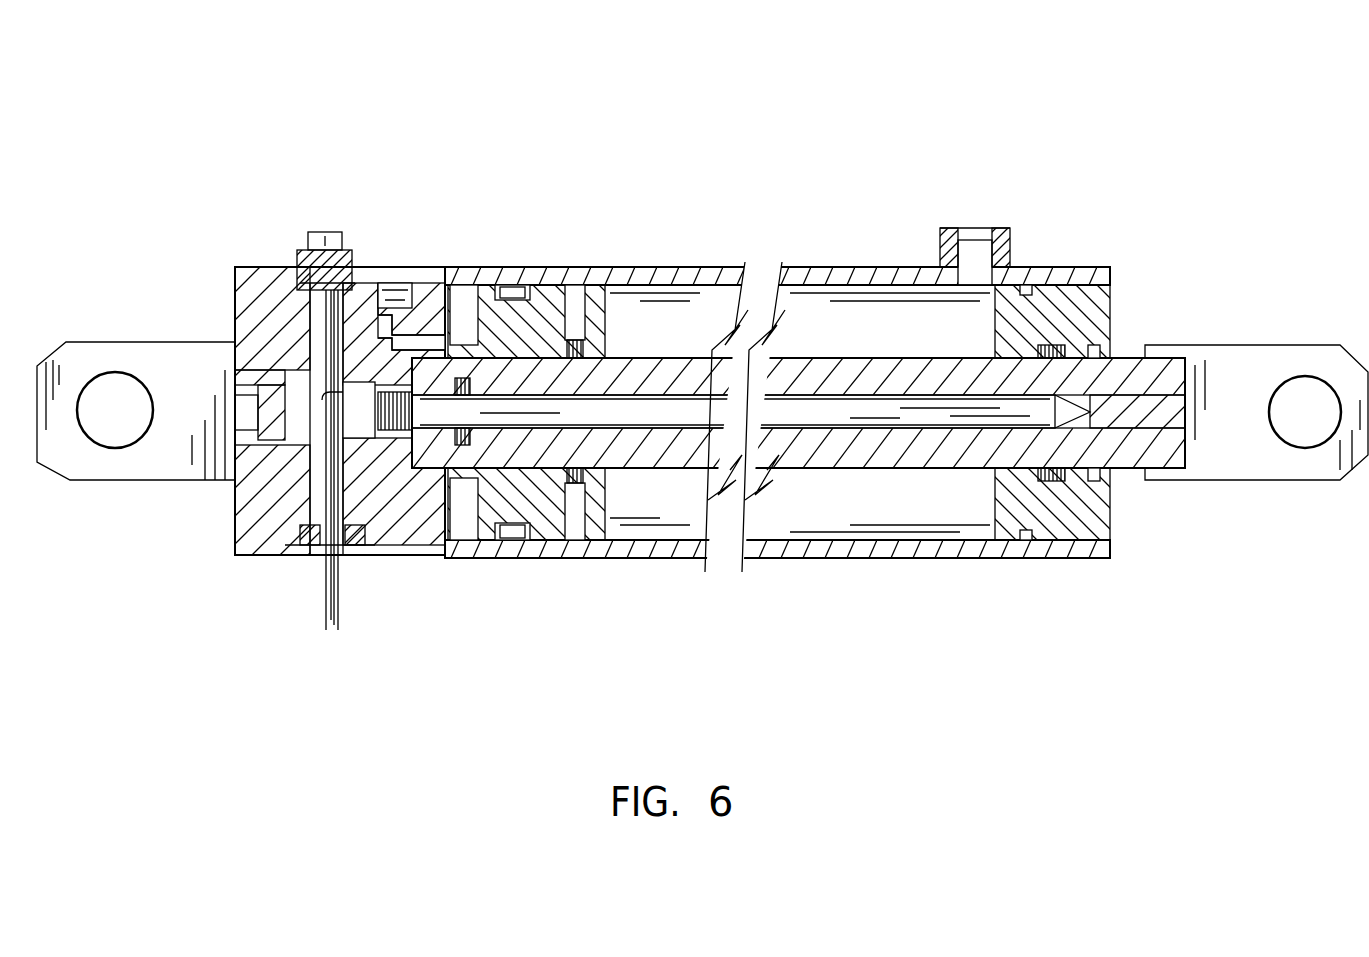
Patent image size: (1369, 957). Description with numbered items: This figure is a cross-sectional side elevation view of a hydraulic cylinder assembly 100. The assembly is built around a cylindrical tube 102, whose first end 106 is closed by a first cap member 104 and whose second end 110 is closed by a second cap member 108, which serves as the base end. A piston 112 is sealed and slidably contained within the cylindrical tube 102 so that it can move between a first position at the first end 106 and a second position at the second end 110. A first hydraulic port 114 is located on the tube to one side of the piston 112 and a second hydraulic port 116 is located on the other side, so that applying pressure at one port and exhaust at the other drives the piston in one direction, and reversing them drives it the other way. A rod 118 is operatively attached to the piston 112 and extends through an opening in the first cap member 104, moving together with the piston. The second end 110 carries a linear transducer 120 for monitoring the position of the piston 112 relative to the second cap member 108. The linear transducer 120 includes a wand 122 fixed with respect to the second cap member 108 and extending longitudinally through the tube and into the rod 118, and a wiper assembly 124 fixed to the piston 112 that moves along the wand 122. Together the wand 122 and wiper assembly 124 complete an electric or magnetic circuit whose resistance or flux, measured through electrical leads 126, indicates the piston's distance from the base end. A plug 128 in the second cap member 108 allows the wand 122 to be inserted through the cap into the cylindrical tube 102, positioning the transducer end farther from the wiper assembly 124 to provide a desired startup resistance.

The hydraulic cylinder assembly 100 is at (697, 150).
The cylindrical tube 102 is at (672, 268).
The first cap member 104 is at (1105, 310).
The first end 106 is at (953, 560).
The second cap member 108 is at (262, 267).
The second end 110 is at (515, 560).
The piston 112 is at (526, 402).
The first hydraulic port 114 is at (973, 250).
The second hydraulic port 116 is at (398, 268).
The rod 118 is at (798, 420).
The linear transducer 120 is at (437, 423).
The wand 122 is at (650, 417).
The wiper assembly 124 is at (542, 537).
The electrical leads 126 is at (335, 585).
The plug 128 is at (278, 442).